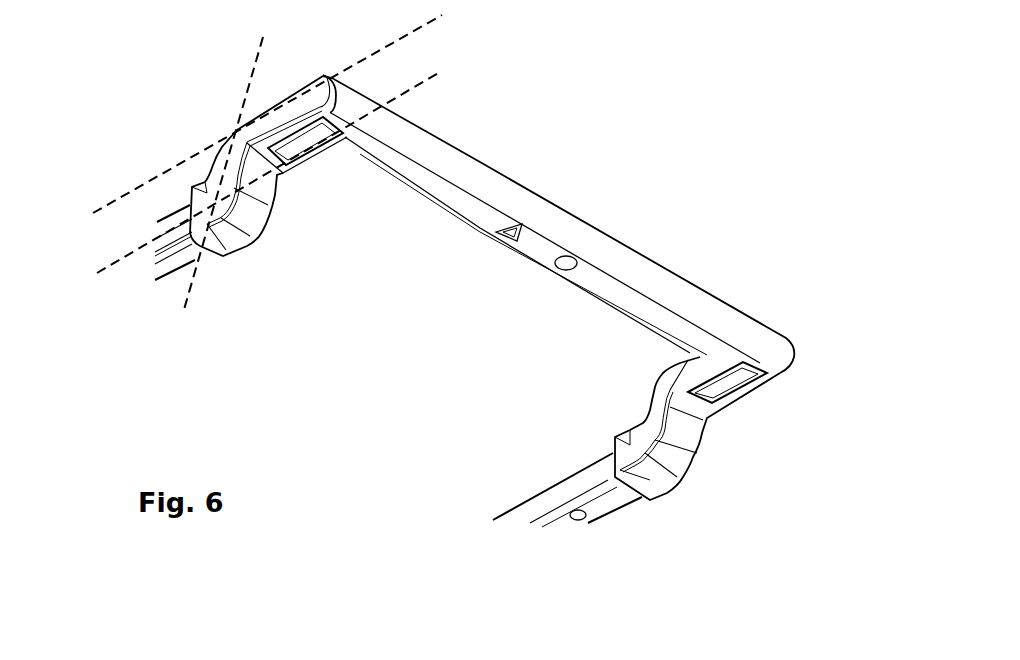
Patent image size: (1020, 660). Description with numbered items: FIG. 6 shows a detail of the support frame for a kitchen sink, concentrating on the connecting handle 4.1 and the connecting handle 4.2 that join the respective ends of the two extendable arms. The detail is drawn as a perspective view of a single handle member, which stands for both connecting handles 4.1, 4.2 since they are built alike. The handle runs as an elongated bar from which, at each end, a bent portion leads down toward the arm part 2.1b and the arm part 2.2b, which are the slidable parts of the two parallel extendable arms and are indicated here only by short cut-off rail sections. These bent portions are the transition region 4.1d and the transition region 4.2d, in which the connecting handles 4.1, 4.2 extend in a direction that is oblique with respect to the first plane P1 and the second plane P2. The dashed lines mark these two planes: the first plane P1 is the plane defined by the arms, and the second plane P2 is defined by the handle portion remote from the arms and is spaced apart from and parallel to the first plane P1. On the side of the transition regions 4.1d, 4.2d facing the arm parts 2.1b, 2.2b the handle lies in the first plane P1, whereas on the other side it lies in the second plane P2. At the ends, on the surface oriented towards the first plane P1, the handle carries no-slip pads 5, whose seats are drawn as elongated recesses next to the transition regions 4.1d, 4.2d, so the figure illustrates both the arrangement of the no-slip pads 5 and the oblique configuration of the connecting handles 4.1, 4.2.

The cross member / support strut 4.1, 4.2 is at (515, 224).
The connecting handle 4.1 is at (515, 224).
The connecting handle 4.2 is at (593, 202).
The end bracket of cross member 4.1d, 4.2d is at (313, 219).
The transition region 4.1d is at (313, 219).
The transition region 4.2d is at (260, 193).
The no-slip pad 5 is at (300, 142).
The arm part 2.1b is at (160, 267).
The arm part 2.2b is at (570, 490).
The first plane P1 is at (281, 175).
The second plane P2 is at (279, 109).